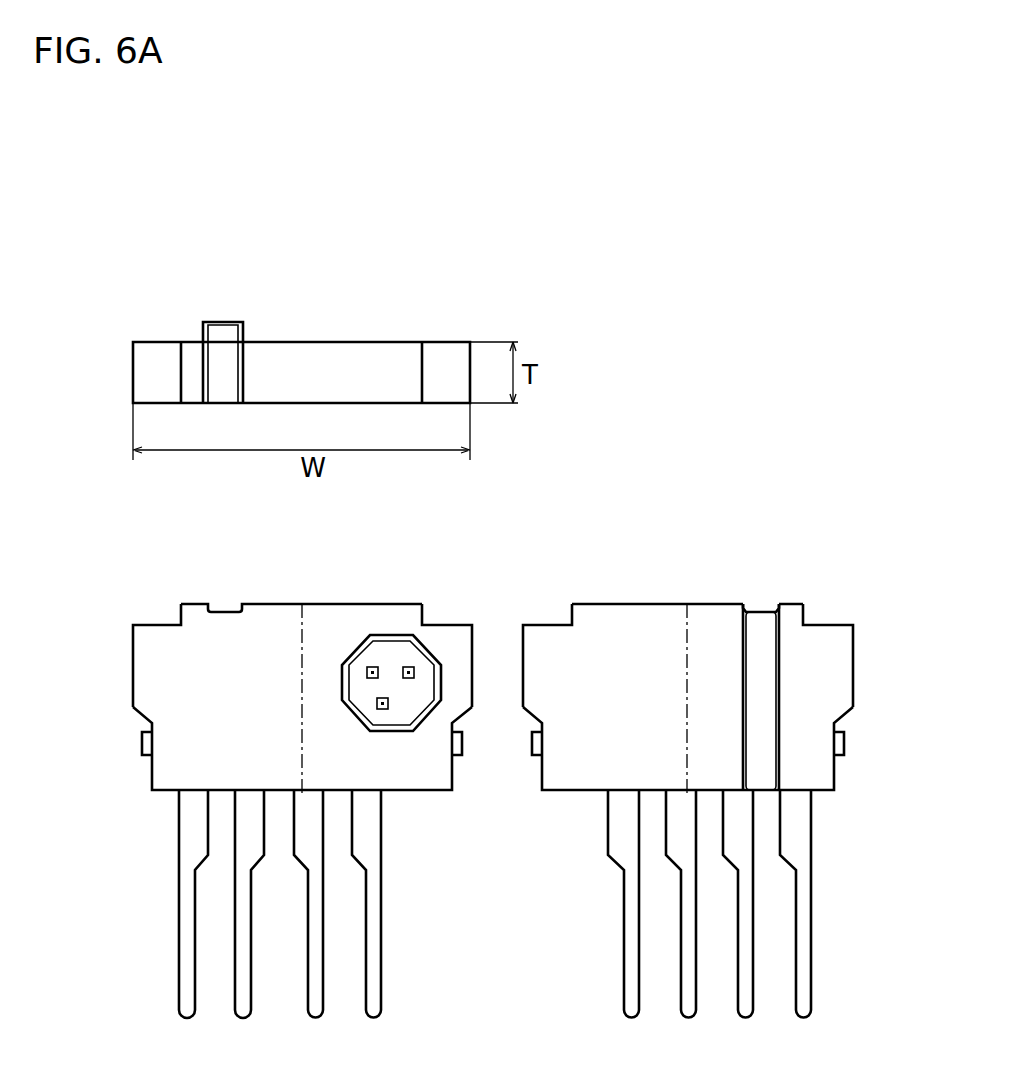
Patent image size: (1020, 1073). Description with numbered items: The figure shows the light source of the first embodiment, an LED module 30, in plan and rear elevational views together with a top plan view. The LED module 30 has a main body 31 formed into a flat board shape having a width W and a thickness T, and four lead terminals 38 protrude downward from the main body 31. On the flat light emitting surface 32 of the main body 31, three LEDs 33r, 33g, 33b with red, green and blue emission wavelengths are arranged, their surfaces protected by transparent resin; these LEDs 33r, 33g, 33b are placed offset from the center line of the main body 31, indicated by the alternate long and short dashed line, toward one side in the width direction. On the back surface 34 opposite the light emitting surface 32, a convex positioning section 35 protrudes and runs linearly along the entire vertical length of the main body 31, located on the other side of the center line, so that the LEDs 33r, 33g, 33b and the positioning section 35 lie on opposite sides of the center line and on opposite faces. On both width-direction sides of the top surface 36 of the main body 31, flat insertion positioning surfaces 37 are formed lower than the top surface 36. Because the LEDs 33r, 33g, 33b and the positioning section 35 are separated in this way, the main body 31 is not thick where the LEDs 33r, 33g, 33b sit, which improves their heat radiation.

The LED module 30 is at (632, 253).
The main body 31 is at (152, 772).
The light emitting surface 32 is at (360, 630).
The LED 33r is at (372, 678).
The LED 33g is at (383, 709).
The LED 33b is at (409, 678).
The back surface 34 is at (655, 632).
The convex positioning section 35 is at (225, 328).
The top surface 36 is at (307, 353).
The insertion positioning surfaces 37 is at (160, 350).
The lead terminals 38 is at (179, 882).